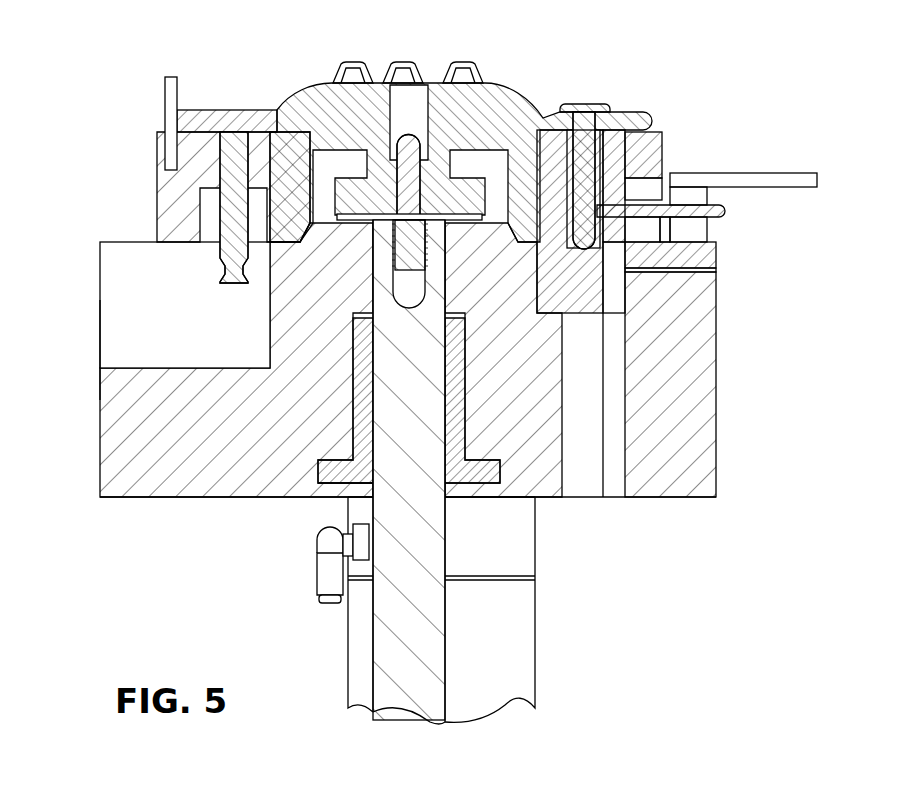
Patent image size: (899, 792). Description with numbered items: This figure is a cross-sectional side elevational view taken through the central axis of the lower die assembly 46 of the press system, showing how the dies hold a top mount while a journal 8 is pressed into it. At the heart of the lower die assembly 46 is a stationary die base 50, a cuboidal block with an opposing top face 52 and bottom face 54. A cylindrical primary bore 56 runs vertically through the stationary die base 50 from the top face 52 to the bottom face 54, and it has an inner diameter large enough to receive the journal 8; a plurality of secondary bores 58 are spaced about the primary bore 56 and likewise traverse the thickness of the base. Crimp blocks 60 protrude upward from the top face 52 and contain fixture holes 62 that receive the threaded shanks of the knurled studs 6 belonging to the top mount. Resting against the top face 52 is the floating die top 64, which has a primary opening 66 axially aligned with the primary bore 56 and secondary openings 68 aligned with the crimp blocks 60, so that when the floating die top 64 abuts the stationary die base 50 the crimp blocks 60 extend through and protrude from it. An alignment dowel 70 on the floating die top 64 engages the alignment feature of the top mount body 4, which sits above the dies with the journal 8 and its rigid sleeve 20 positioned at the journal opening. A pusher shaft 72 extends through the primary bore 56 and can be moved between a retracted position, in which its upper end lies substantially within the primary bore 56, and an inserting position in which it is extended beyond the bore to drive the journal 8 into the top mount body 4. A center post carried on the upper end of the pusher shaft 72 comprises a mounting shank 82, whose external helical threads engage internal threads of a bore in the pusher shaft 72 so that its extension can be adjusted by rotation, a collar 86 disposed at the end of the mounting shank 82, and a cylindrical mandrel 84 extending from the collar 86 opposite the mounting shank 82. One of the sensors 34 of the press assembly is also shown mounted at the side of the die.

The top mount body 4 is at (522, 100).
The knurled stud 6 is at (575, 108).
The journal 8 is at (464, 56).
The rigid sleeve 20 is at (363, 100).
The sensor 34 is at (725, 212).
The lower die assembly 46 is at (86, 340).
The stationary die base 50 is at (100, 419).
The top face 52 is at (125, 242).
The bottom face 54 is at (143, 497).
The primary bore 56 is at (355, 407).
The secondary bore 58 is at (603, 467).
The crimp block 60 is at (613, 288).
The fixture hole 62 is at (595, 175).
The floating die top 64 is at (662, 140).
The primary opening 66 is at (303, 182).
The secondary opening 68 is at (622, 150).
The alignment dowel 70 is at (162, 122).
The pusher shaft 72 is at (362, 492).
The mounting shank 82 is at (428, 253).
The mandrel 84 is at (408, 133).
The collar 86 is at (520, 213).